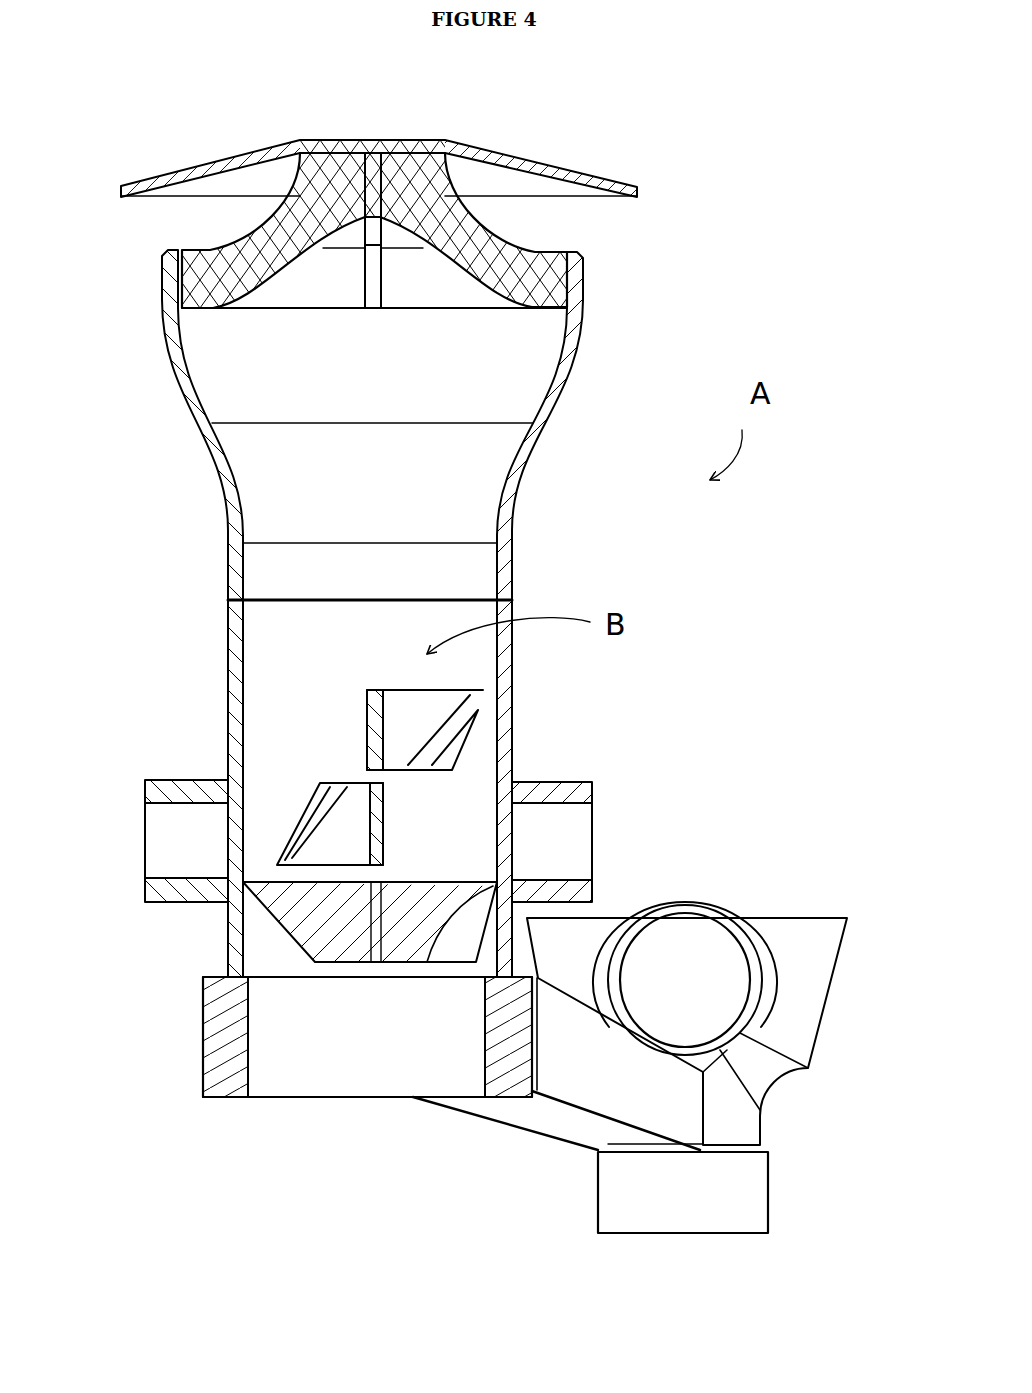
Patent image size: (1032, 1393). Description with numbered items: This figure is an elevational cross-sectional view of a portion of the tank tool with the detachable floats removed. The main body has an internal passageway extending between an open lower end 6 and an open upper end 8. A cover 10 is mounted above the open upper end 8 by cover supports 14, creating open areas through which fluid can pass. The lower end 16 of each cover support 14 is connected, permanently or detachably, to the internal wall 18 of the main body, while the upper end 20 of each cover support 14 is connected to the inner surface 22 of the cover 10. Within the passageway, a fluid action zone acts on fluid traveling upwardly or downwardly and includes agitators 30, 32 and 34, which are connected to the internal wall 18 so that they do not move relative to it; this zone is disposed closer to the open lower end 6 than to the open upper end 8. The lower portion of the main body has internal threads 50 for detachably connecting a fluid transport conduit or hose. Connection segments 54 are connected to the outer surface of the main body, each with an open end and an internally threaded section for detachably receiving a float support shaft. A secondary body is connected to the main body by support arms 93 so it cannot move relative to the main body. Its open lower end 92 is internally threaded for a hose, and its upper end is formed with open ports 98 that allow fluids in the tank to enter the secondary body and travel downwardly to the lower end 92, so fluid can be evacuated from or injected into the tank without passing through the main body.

The open lower end 6 is at (371, 1110).
The open upper end 8 is at (404, 272).
The cover 10 is at (509, 126).
The cover support 14 is at (268, 236).
The lower end of cover support 16 is at (555, 293).
The internal wall 18 is at (238, 478).
The upper end of cover support 20 is at (328, 159).
The inner surface of cover 22 is at (453, 167).
The agitator 30 is at (367, 713).
The agitator 32 is at (390, 820).
The agitator 34 is at (326, 930).
The internal threads 50 is at (248, 1060).
The connection segment 54 is at (178, 776).
The lower end of secondary body 92 is at (680, 1264).
The support arm 93 is at (527, 1133).
The open port 98 is at (695, 953).